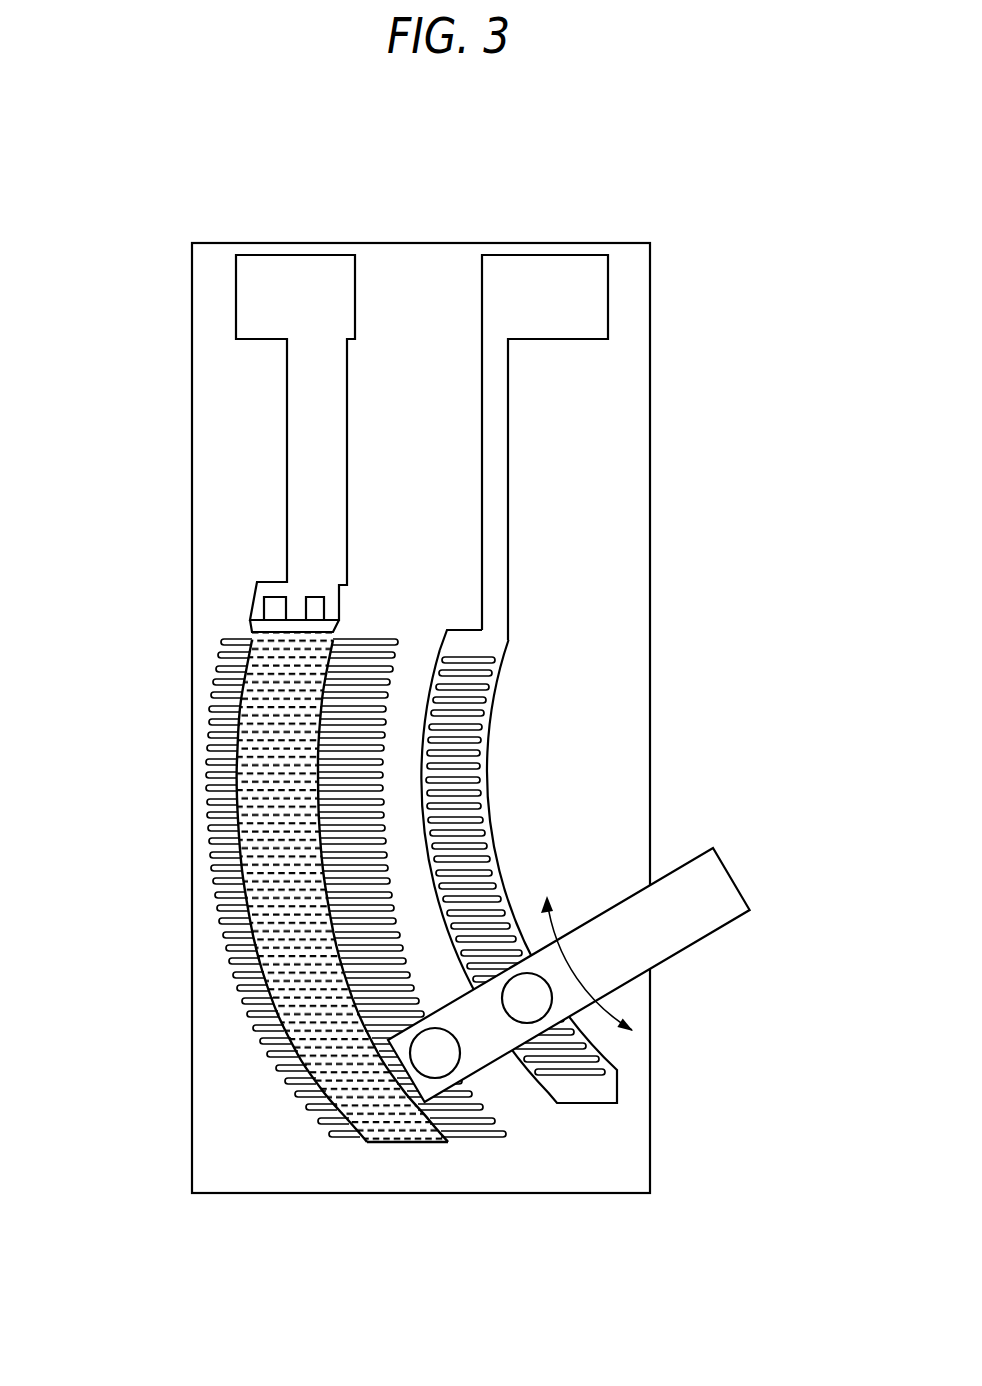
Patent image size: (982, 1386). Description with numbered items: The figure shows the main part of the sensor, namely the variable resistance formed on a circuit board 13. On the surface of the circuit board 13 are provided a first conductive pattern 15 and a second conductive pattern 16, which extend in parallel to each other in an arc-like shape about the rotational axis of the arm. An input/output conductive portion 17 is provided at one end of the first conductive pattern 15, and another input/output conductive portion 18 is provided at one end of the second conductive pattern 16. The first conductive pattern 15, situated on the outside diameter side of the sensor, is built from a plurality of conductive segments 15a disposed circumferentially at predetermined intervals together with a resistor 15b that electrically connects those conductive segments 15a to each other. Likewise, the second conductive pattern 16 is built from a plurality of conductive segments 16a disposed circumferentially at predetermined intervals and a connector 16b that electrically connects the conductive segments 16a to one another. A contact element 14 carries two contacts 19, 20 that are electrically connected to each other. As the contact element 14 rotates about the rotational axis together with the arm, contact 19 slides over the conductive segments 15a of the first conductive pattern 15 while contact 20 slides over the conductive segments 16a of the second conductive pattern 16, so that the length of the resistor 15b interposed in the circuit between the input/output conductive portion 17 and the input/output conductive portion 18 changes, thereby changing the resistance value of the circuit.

The circuit board 13 is at (188, 1175).
The contact element 14 is at (627, 1072).
The first conductive pattern 15 is at (278, 964).
The conductive segments 15a is at (207, 717).
The resistor 15b is at (393, 1145).
The second conductive pattern 16 is at (599, 968).
The conductive segments 16a is at (455, 747).
The connector 16b is at (493, 878).
The input/output conductive portion 17 is at (325, 258).
The input/output conductive portion 18 is at (580, 258).
The contact 19 is at (440, 1055).
The contact 20 is at (530, 997).